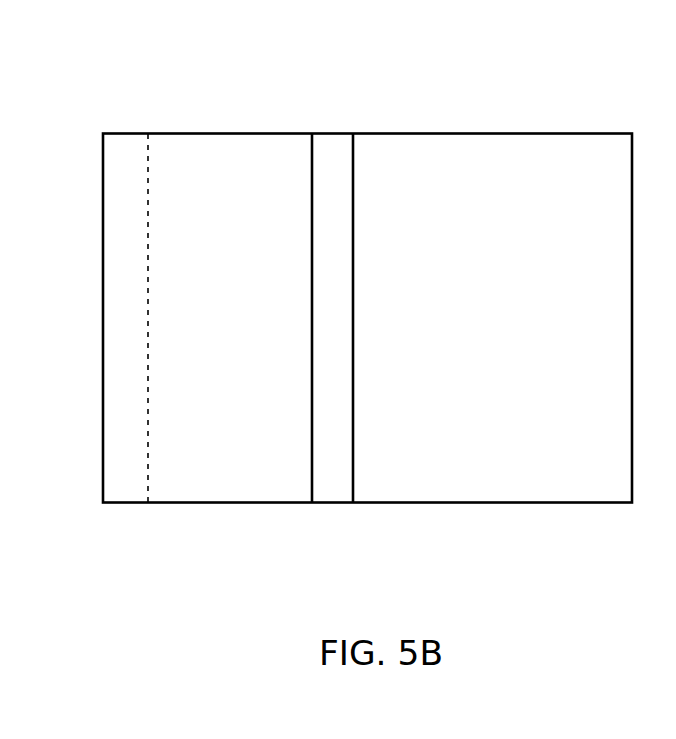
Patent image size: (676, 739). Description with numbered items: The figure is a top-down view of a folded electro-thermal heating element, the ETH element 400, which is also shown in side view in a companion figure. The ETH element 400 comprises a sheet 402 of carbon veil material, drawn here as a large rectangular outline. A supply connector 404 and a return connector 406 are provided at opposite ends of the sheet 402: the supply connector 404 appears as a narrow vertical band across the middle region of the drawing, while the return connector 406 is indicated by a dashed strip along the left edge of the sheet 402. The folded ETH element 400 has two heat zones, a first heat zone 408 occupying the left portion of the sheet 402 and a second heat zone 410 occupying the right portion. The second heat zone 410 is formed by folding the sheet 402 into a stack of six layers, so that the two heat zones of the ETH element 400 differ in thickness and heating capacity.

The folded ETH element 400 is at (568, 72).
The sheet 402 is at (470, 133).
The supply connector 404 is at (333, 152).
The return connector 406 is at (112, 167).
The first heat zone 408 is at (248, 326).
The second heat zone 410 is at (512, 326).